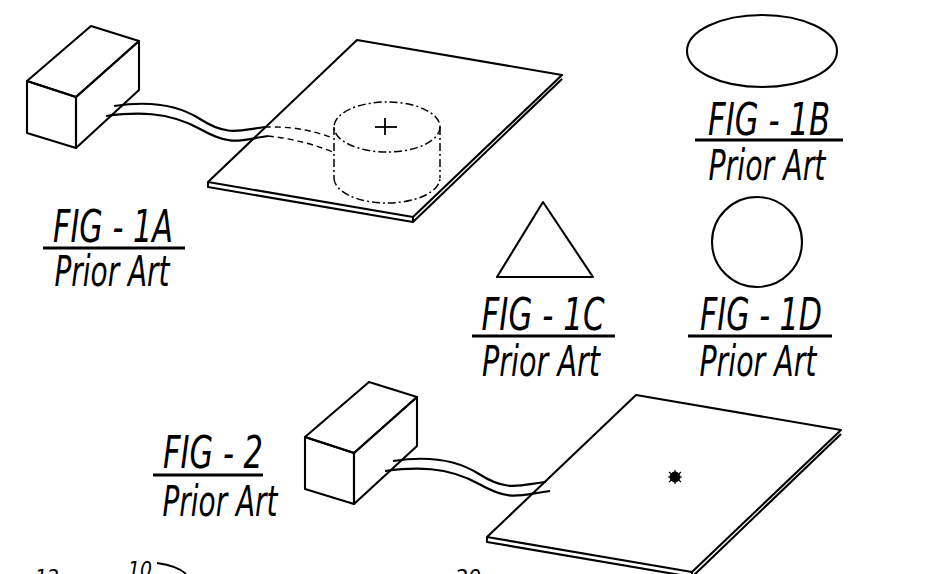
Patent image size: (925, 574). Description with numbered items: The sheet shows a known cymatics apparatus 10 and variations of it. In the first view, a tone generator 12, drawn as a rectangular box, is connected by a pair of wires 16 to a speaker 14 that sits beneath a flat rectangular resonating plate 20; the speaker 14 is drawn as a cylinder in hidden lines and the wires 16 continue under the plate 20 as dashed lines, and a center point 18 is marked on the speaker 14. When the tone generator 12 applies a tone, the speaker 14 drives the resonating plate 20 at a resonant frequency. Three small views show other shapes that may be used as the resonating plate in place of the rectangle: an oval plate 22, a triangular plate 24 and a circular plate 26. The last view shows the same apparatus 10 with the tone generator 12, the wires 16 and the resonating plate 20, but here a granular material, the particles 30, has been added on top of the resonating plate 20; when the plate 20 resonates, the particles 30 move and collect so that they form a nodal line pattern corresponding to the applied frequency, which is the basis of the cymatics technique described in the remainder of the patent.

In FIG. 1A, the prior art sensing system 10 is at (271, 56).
In FIG. 2, the prior art sensing system 10 is at (457, 393).
In FIG. 1A, the tone generator 12 is at (85, 57).
In FIG. 2, the tone generator 12 is at (363, 412).
In FIG. 1A, the speaker 14 is at (338, 173).
In FIG. 1A, the cable / wires 16 is at (205, 132).
In FIG. 2, the cable / wires 16 is at (473, 485).
In FIG. 1A, the center point of transducer 18 is at (388, 125).
In FIG. 1A, the resonating plate 20 is at (506, 132).
In FIG. 2, the resonating plate 20 is at (724, 543).
In FIG. 1B, the oval shape 22 is at (748, 58).
In FIG. 1C, the triangular shape 24 is at (523, 266).
In FIG. 1D, the circular shape 26 is at (743, 249).
In FIG. 2, the particles 30 is at (687, 473).